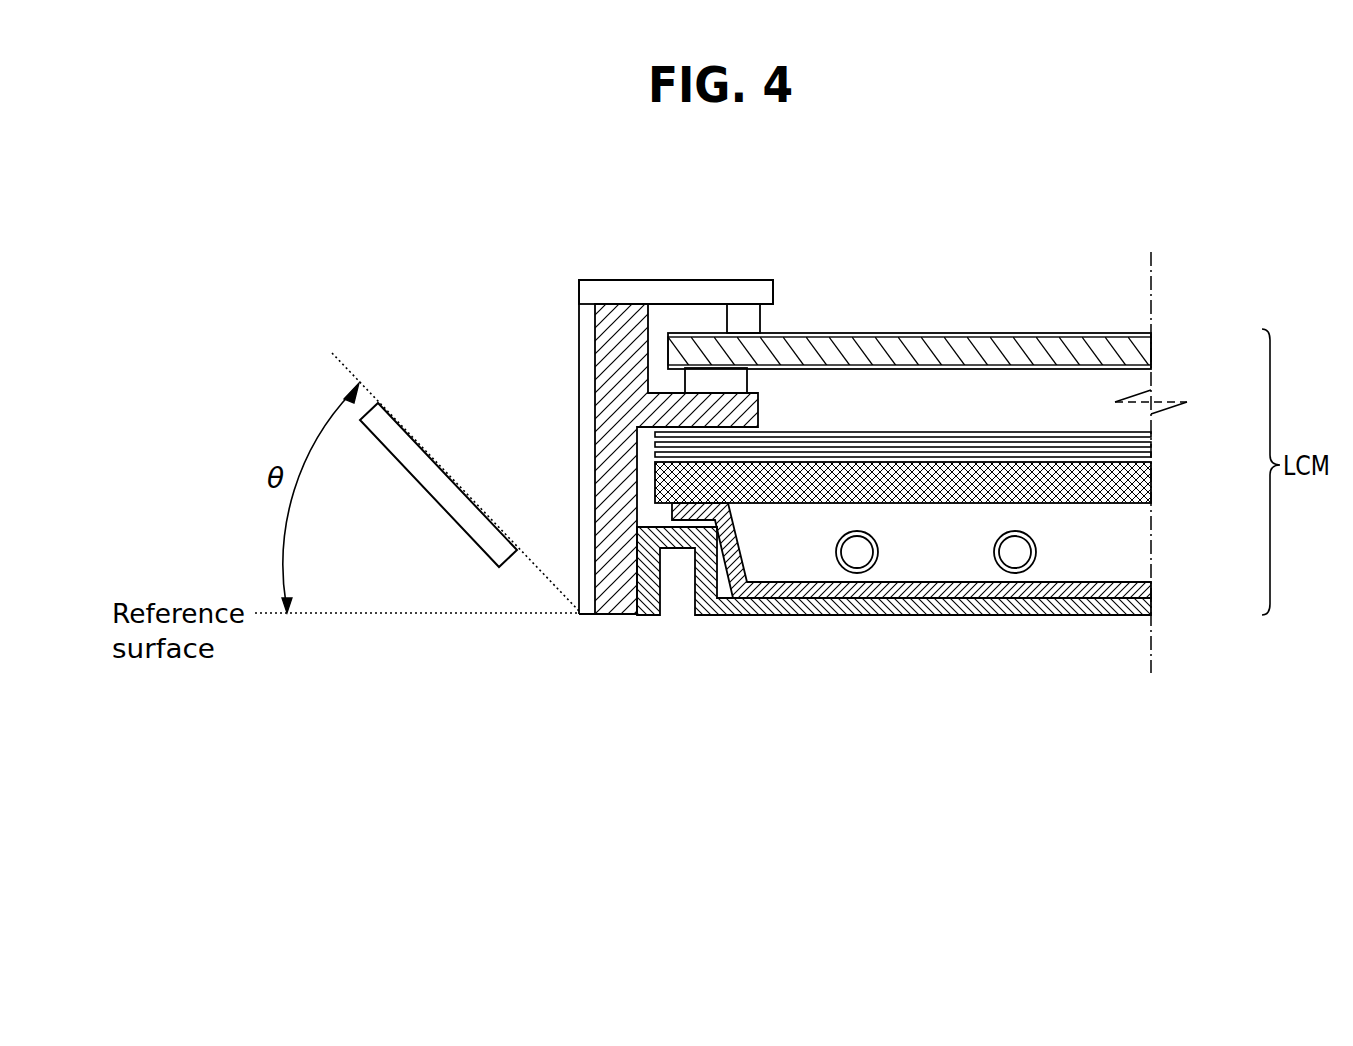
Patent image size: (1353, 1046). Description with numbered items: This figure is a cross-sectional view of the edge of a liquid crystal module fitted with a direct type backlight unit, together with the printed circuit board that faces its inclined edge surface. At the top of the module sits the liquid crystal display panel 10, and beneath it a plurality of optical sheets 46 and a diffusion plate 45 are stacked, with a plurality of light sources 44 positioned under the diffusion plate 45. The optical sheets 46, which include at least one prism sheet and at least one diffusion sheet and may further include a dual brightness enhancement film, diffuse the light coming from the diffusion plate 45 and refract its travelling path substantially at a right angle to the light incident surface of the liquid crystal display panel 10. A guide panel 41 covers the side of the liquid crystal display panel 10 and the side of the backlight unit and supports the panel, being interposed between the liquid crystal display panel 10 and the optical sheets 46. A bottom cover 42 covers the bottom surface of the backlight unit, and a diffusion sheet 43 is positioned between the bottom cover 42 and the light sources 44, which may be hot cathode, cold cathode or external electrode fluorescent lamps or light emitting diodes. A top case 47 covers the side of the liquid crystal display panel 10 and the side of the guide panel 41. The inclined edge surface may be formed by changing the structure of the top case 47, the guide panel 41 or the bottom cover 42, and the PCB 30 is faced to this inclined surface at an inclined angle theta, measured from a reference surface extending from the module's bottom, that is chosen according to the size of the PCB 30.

The liquid crystal display panel 10 is at (1150, 352).
The PCB 30 is at (442, 477).
The guide panel 41 is at (610, 312).
The bottom cover 42 is at (1077, 615).
The diffusion sheet 43 is at (967, 598).
The light sources 44 is at (858, 566).
The diffusion plate 45 is at (1152, 490).
The optical sheets 46 is at (1152, 443).
The top case 47 is at (717, 288).